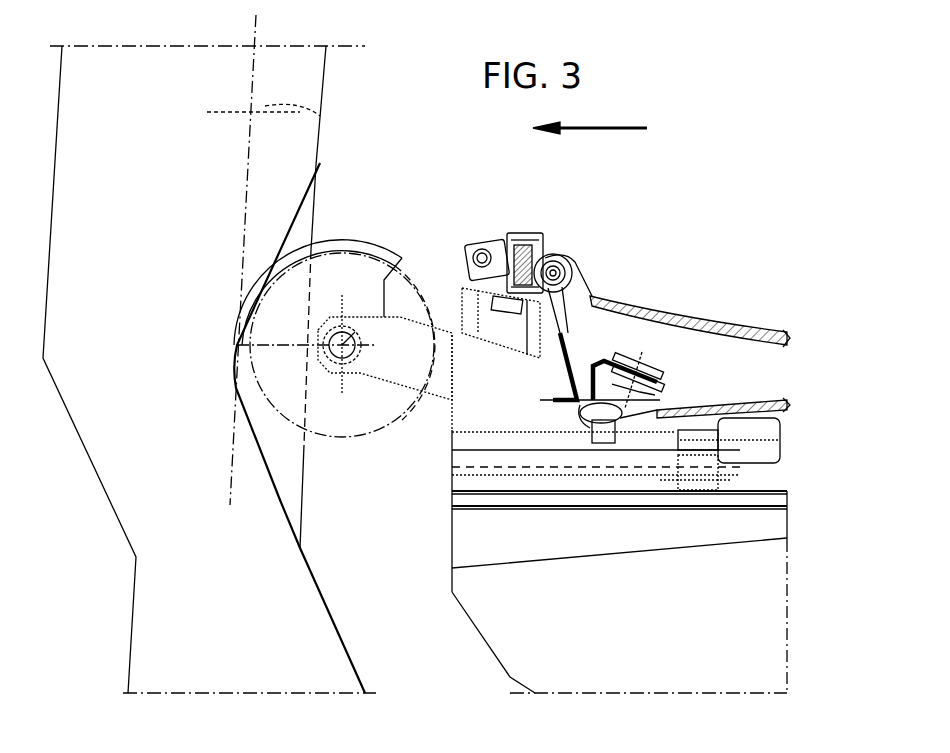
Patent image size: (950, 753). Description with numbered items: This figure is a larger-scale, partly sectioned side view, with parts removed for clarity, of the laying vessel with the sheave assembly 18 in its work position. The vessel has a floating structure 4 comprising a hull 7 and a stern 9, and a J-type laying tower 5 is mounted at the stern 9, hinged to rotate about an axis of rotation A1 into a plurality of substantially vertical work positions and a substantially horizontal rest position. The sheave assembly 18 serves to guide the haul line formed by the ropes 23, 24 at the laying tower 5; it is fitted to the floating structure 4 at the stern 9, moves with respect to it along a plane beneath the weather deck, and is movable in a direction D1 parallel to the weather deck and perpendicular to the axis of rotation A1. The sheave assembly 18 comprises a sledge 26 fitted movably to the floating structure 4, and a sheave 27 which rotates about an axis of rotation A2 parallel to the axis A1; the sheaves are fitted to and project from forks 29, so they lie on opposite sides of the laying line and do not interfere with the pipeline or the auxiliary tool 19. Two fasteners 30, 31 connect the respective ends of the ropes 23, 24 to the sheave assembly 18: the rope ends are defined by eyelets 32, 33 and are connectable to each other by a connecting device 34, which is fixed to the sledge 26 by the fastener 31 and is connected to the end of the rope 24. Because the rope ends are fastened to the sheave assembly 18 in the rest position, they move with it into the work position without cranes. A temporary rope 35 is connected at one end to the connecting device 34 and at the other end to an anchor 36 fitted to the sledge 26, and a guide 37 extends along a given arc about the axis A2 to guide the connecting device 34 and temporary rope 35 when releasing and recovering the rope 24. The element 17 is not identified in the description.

The floating structure 4 is at (800, 598).
The J-type laying tower 5 is at (372, 54).
The hull 7 is at (500, 630).
The stern 9 is at (425, 660).
The upper frame part 17 is at (73, 62).
The auxiliary tool 19 is at (257, 33).
The sheave assembly 18 is at (648, 246).
The rope 23 is at (723, 406).
The rope 24 is at (730, 324).
The sledge 26 is at (452, 467).
The sheave 27 is at (330, 420).
The forks 29 is at (390, 378).
The fastener 30 is at (607, 440).
The fastener 31 is at (505, 313).
The eyelet 32 is at (540, 423).
The eyelet 33 is at (572, 270).
The connecting device 34 is at (523, 242).
The temporary rope 35 is at (570, 350).
The anchor 36 is at (648, 370).
The guide 37 is at (398, 230).
The axis of rotation A1 is at (300, 112).
The axis of rotation A2 is at (362, 282).
The direction D1 is at (603, 125).